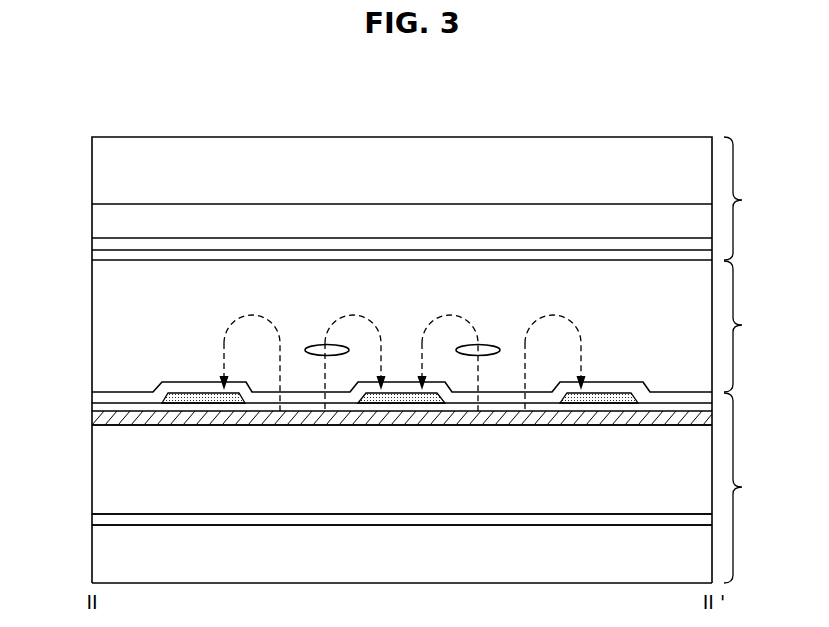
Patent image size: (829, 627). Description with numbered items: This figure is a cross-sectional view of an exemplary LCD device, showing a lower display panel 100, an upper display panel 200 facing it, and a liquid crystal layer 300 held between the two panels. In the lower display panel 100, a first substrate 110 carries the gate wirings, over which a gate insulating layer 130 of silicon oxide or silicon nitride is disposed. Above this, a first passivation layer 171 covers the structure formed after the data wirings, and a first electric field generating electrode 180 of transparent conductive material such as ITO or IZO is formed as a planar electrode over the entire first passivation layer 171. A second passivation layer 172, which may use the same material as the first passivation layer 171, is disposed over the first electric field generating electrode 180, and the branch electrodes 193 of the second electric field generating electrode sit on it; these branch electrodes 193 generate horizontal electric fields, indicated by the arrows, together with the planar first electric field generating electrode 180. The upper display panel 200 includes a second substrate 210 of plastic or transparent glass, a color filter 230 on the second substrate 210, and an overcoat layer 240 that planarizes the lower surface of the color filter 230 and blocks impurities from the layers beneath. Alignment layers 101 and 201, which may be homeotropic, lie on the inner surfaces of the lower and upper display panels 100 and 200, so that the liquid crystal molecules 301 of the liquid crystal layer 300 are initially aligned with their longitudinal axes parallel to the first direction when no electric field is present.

The lower display panel 100 is at (753, 488).
The first substrate 110 is at (112, 551).
The gate insulating layer 130 is at (105, 520).
The first passivation layer 171 is at (112, 465).
The second passivation layer 172 is at (100, 408).
The first electric field generating electrode 180 is at (100, 419).
The alignment layer 101 is at (126, 397).
The branch electrodes 193 is at (192, 398).
The upper display panel 200 is at (753, 198).
The alignment layer 201 is at (616, 253).
The second substrate 210 is at (556, 163).
The color filter 230 is at (248, 224).
The overcoat layer 240 is at (353, 245).
The liquid crystal layer 300 is at (753, 326).
The liquid crystal molecules 301 is at (488, 347).